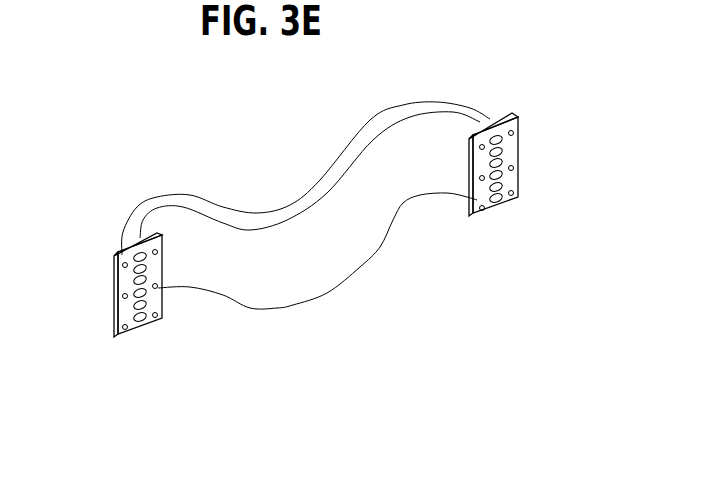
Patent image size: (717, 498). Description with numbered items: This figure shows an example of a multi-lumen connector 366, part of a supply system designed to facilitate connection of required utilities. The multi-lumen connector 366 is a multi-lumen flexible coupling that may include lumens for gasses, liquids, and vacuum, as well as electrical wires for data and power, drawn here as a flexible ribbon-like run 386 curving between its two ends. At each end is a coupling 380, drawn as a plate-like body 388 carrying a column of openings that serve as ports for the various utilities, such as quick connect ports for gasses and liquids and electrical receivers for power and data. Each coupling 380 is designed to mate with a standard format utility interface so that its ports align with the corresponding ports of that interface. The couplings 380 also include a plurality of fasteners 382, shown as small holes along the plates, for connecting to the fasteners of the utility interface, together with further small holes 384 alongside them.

The multi-lumen connector 366 is at (262, 133).
The couplings 380 is at (135, 256).
The fasteners 382 is at (127, 327).
The mounting holes 384 is at (160, 290).
The ribbon cable 386 is at (290, 287).
The connector 388 is at (116, 260).